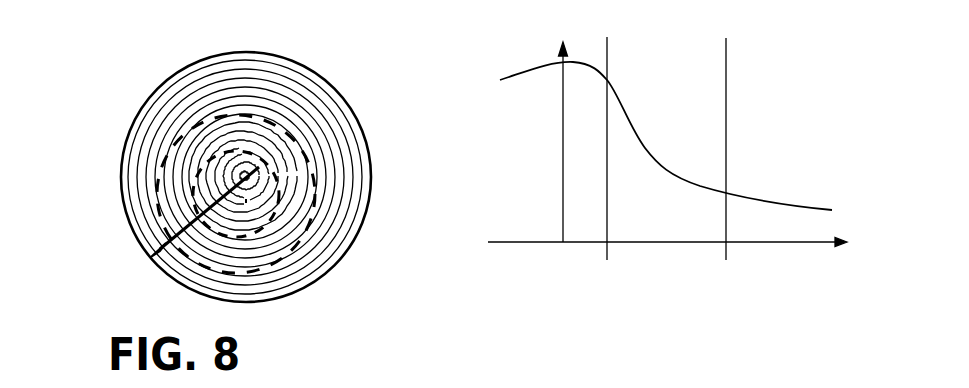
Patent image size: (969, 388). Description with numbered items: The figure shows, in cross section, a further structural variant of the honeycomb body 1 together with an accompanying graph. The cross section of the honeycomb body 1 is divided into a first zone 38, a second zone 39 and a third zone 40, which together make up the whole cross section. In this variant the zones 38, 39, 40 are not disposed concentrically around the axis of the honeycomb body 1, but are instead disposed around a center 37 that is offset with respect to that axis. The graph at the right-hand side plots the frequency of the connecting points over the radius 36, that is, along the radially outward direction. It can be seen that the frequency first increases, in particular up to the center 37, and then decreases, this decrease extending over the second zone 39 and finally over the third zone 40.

The honeycomb body 1 is at (167, 33).
The radius 36 is at (243, 173).
The center 37 is at (246, 201).
The first zone 38 is at (245, 187).
The second zone 39 is at (183, 162).
The third zone 40 is at (160, 100).